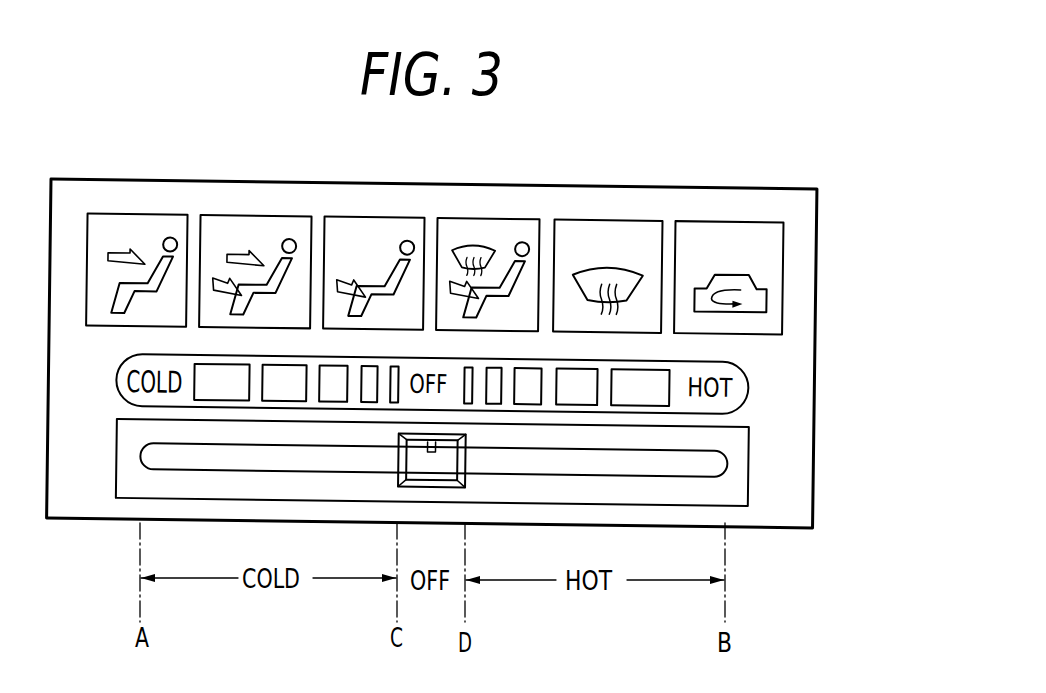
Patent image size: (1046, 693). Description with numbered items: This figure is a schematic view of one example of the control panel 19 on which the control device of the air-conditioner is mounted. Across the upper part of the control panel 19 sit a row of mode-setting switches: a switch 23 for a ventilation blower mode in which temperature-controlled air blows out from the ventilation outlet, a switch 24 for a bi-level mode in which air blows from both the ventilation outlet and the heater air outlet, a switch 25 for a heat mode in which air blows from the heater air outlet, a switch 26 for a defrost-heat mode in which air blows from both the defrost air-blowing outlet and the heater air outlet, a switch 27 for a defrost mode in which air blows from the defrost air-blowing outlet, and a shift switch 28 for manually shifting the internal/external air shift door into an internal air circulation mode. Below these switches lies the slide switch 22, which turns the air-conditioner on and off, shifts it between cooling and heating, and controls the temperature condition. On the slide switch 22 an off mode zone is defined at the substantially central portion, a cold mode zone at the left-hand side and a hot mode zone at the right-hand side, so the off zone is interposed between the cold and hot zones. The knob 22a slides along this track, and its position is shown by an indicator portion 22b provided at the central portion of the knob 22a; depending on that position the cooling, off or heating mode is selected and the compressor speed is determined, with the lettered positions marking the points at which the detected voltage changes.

The control panel 19 is at (727, 191).
The slide switch 22 is at (492, 494).
The knob 22a is at (431, 501).
The indicator portion 22b is at (435, 452).
The switch 23 is at (150, 225).
The switch 24 is at (265, 227).
The switch 25 is at (378, 230).
The switch 26 is at (498, 230).
The switch 27 is at (613, 232).
The shift switch 28 is at (770, 250).